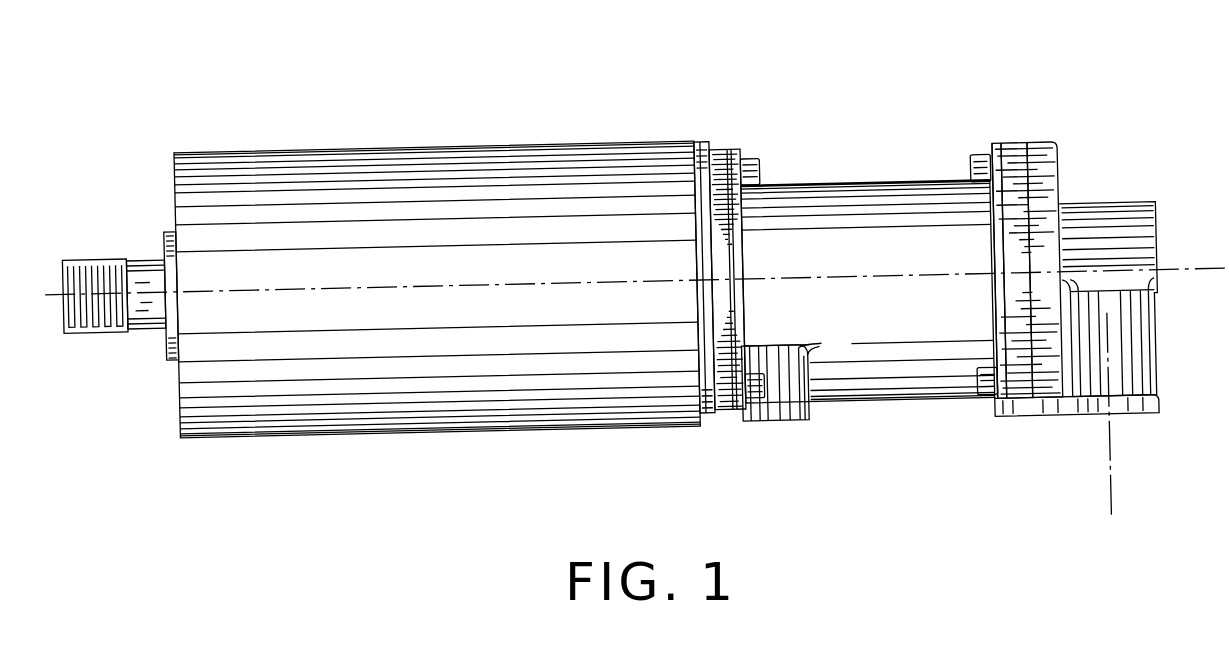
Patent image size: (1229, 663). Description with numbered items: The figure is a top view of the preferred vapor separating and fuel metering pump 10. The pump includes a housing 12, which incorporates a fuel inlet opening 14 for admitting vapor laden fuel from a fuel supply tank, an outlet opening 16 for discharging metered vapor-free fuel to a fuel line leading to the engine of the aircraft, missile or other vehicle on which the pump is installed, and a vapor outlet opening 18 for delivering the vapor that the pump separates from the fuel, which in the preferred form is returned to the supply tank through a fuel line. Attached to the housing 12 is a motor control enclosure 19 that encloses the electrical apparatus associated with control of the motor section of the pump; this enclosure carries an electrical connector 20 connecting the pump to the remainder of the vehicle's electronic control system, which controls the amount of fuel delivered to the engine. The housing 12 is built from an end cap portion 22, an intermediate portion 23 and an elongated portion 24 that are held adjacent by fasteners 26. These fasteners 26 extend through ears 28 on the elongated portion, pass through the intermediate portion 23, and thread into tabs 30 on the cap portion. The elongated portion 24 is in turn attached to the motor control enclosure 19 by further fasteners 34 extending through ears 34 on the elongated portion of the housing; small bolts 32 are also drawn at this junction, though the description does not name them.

The vapor separating and fuel metering pump 10 is at (880, 132).
The housing 12 is at (1062, 273).
The fuel inlet opening 14 is at (1120, 424).
The outlet opening 16 is at (789, 425).
The vapor outlet opening 18 is at (1156, 243).
The motor control enclosure 19 is at (448, 142).
The electrical connector 20 is at (108, 244).
The end cap portion 22 is at (1068, 181).
The intermediate portion 23 is at (1015, 150).
The elongated portion 24 is at (802, 187).
The fasteners 26 is at (972, 169).
The ears 28 is at (995, 154).
The tabs 30 is at (1043, 150).
The bolts 32 is at (762, 166).
The fasteners and ears 34 is at (740, 150).